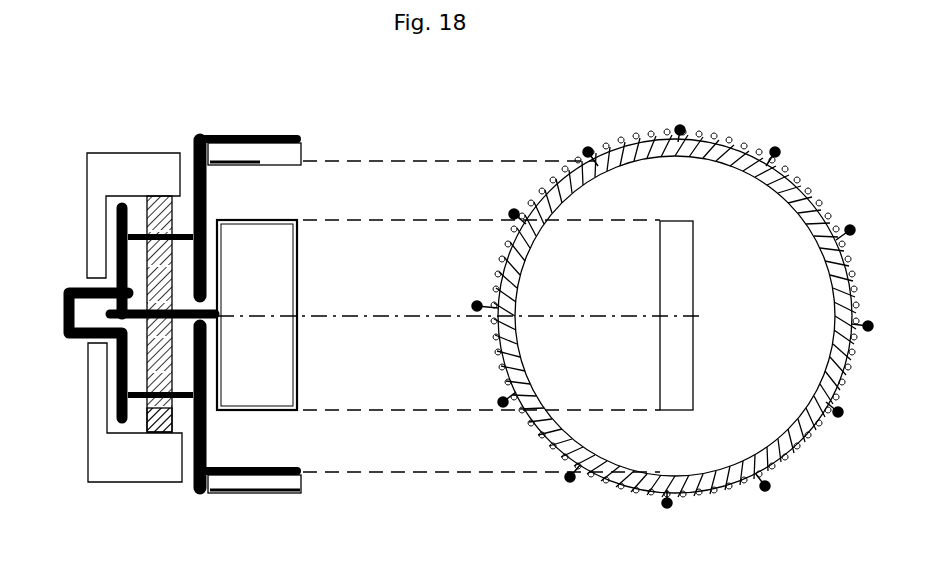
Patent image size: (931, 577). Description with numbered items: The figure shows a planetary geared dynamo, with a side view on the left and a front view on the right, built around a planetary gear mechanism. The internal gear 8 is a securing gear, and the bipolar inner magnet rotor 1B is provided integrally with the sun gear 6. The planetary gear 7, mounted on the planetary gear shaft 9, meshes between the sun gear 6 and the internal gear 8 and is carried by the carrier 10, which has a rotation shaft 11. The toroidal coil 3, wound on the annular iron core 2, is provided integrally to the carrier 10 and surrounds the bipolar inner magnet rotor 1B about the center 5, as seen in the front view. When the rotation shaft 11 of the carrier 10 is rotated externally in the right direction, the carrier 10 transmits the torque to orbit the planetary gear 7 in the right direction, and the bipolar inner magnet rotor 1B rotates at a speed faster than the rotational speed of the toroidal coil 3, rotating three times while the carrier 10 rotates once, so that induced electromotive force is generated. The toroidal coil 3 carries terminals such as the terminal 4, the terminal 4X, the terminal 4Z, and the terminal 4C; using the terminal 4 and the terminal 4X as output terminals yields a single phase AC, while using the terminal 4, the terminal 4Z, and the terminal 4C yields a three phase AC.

The bipolar inner magnet rotor 1B is at (677, 290).
The annular iron core 2 is at (254, 150).
The toroidal coil 3 is at (648, 140).
The terminal 4 is at (688, 126).
The terminal 4C is at (503, 406).
The terminal 4X is at (669, 506).
The terminal 4Z is at (840, 416).
The center 5 is at (677, 316).
The sun gear 6 is at (147, 340).
The planetary gear 7 is at (147, 425).
The internal gear 8 is at (153, 172).
The planetary gear shaft 9 is at (163, 435).
The carrier 10 is at (205, 417).
The rotation shaft 11 is at (68, 290).